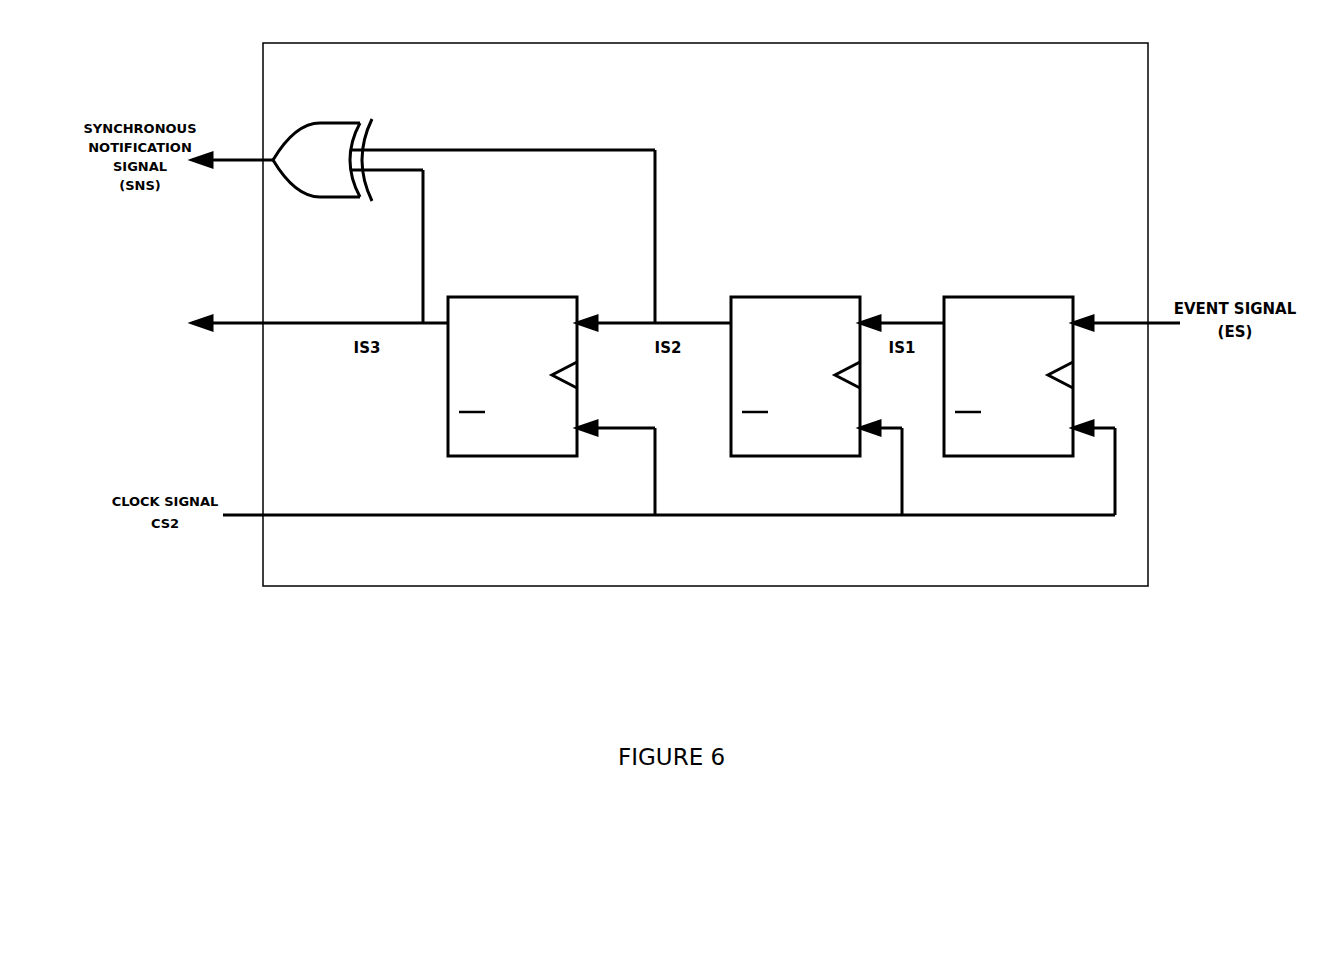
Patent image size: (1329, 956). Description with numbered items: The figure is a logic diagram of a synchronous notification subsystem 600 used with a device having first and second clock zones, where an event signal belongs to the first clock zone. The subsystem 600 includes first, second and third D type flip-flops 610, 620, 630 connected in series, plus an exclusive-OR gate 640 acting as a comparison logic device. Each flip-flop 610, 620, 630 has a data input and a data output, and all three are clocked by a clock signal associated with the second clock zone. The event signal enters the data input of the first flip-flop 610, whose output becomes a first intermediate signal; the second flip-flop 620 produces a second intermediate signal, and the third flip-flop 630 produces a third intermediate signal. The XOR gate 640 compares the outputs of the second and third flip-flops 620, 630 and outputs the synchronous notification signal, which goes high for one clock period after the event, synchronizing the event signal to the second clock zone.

The synchronous notification subsystem 600 is at (1148, 72).
The first D type flip-flop 610 is at (1008, 294).
The second D type flip-flop 620 is at (795, 294).
The third D type flip-flop 630 is at (512, 294).
The exclusive-OR gate 640 is at (340, 121).